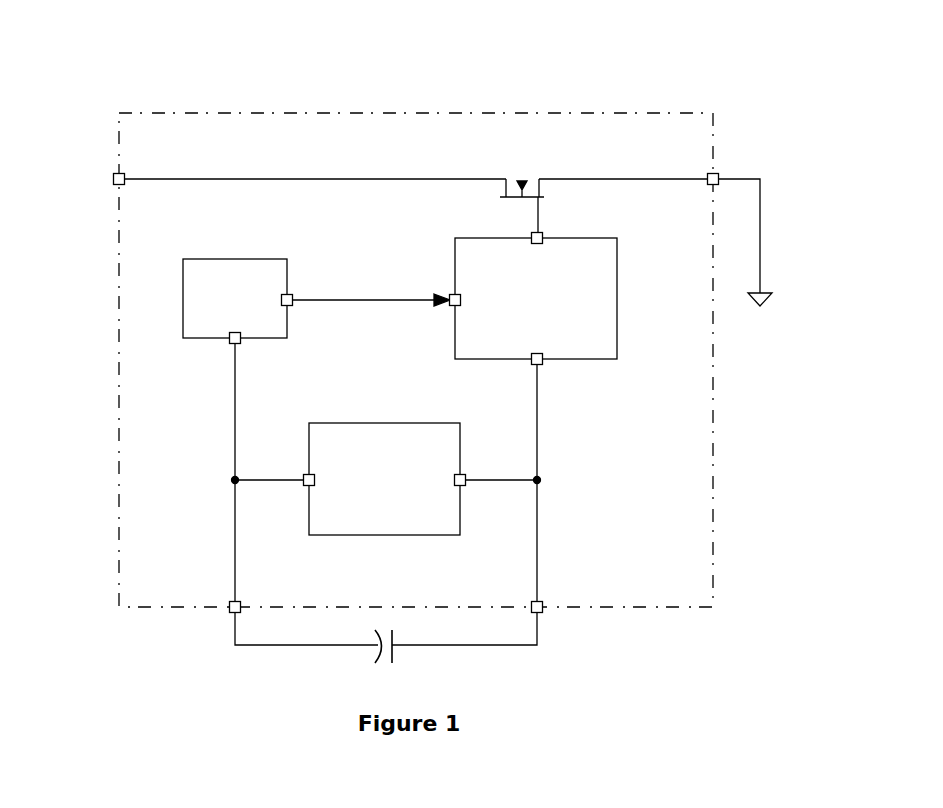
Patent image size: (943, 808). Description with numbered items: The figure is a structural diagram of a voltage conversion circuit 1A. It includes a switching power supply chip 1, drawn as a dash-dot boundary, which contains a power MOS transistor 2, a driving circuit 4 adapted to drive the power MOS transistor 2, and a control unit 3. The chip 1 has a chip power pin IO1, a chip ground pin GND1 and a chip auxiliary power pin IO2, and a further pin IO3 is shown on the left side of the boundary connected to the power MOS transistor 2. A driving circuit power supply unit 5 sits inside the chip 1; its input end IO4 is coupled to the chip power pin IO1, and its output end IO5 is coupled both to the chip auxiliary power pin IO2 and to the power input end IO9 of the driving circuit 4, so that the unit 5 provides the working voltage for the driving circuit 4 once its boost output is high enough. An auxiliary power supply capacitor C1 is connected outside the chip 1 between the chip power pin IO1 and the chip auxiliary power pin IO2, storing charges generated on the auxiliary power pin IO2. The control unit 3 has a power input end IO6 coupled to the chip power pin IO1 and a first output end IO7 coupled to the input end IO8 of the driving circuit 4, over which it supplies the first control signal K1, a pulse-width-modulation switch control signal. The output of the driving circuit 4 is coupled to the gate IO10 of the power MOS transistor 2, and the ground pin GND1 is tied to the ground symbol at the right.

The voltage conversion circuit 1A is at (514, 72).
The switching power supply chip 1 is at (652, 112).
The power MOS transistor 2 is at (520, 158).
The control unit 3 is at (235, 247).
The driving circuit 4 is at (633, 320).
The driving circuit power supply unit 5 is at (403, 415).
The first control signal K1 is at (371, 291).
The auxiliary power supply capacitor C1 is at (395, 655).
The chip ground pin GND1 is at (741, 168).
The chip power pin IO1 is at (217, 622).
The chip auxiliary power pin IO2 is at (551, 619).
The terminal IO3 is at (95, 174).
The input end of the driving circuit power supply unit IO4 is at (292, 493).
The output end of the driving circuit power supply unit IO5 is at (476, 494).
The power input end of the control unit IO6 is at (233, 345).
The first output end of the control unit IO7 is at (295, 305).
The input end of the driving circuit IO8 is at (450, 295).
The power input end of the driving circuit IO9 is at (545, 360).
The gate of the power MOS transistor IO10 is at (540, 232).